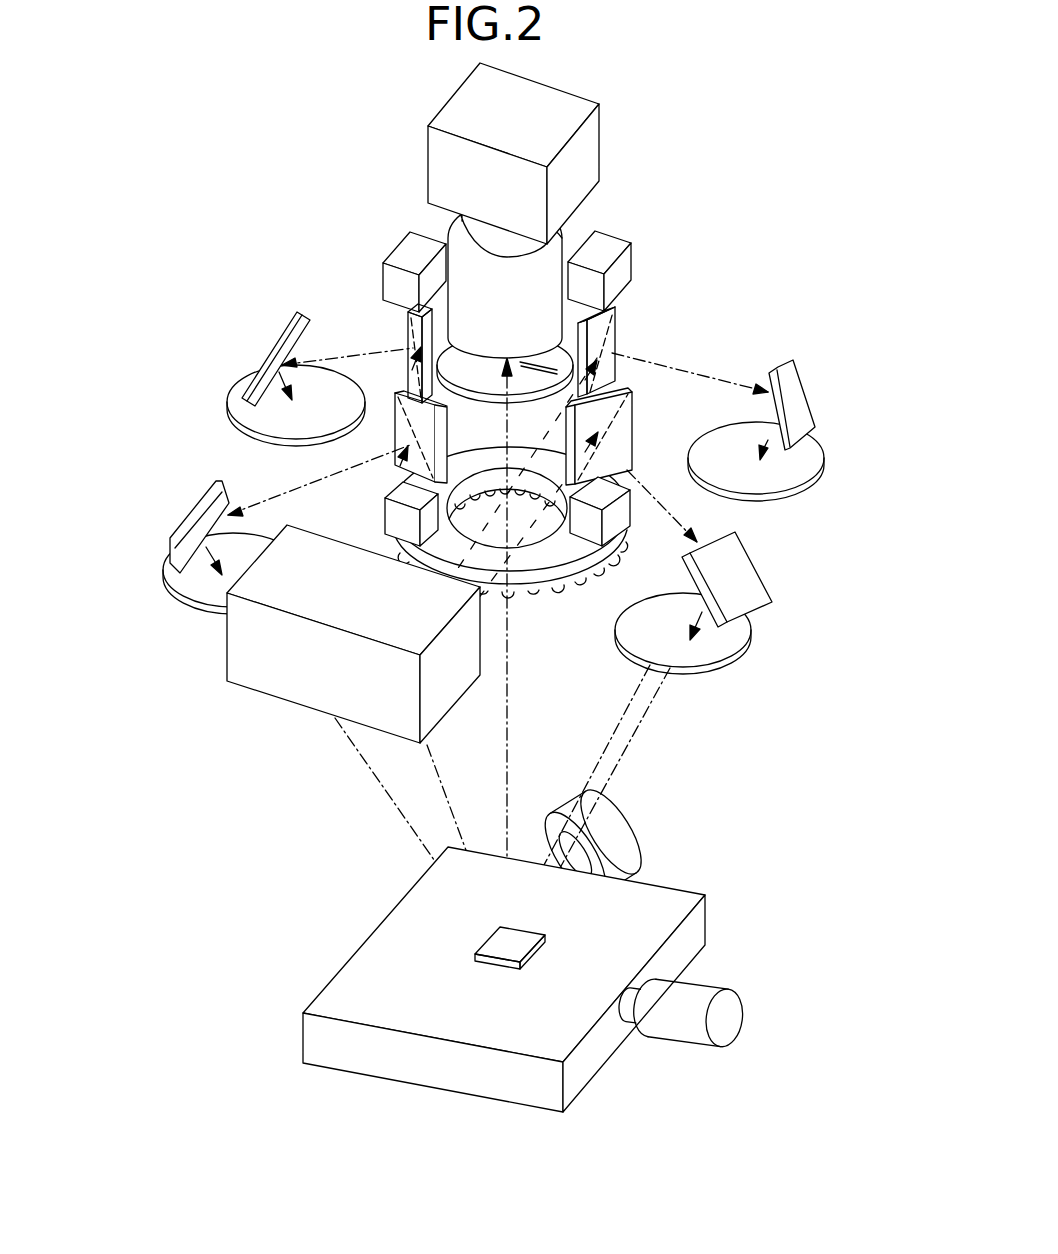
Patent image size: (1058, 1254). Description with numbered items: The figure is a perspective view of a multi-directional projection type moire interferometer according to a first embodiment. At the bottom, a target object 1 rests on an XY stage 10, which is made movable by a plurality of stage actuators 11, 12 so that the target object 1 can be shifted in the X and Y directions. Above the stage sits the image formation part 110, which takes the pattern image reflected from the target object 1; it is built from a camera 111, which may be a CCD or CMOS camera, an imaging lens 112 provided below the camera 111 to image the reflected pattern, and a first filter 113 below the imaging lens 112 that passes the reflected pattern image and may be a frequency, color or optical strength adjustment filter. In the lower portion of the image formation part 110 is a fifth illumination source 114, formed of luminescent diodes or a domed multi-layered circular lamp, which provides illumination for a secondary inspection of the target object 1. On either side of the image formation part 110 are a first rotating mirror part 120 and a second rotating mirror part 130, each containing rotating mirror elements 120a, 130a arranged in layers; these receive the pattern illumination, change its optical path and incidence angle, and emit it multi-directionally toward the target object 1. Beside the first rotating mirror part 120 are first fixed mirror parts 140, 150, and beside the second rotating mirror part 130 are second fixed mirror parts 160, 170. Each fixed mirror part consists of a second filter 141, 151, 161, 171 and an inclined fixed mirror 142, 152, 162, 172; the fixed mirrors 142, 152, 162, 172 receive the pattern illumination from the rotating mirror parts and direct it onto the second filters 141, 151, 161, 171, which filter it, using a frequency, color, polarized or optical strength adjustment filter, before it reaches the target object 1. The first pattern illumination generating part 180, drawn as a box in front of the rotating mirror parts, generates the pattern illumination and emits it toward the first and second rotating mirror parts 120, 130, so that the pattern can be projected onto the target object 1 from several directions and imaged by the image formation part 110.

The target object 1 is at (497, 953).
The XY stage 10 is at (352, 931).
The stage actuator 11 is at (627, 813).
The stage actuator 12 is at (707, 990).
The image formation part 110 is at (539, 210).
The camera 111 is at (597, 172).
The imaging lens 112 is at (455, 240).
The first filter 113 is at (477, 398).
The fifth illumination source 114 is at (557, 592).
The first rotating mirror part 120 is at (339, 366).
The rotating mirror element 120a is at (374, 248).
The second rotating mirror part 130 is at (679, 380).
The rotating mirror element 130a is at (644, 260).
The first fixed mirror part 140 is at (166, 547).
The second filter 141 is at (170, 580).
The fixed mirror 142 is at (177, 533).
The first fixed mirror part 150 is at (241, 375).
The second filter 151 is at (242, 412).
The fixed mirror 152 is at (275, 348).
The second fixed mirror part 160 is at (742, 598).
The second filter 161 is at (738, 638).
The fixed mirror 162 is at (815, 628).
The second fixed mirror part 170 is at (806, 420).
The second filter 171 is at (820, 455).
The fixed mirror 172 is at (802, 395).
The first pattern illumination generating part 180 is at (258, 682).